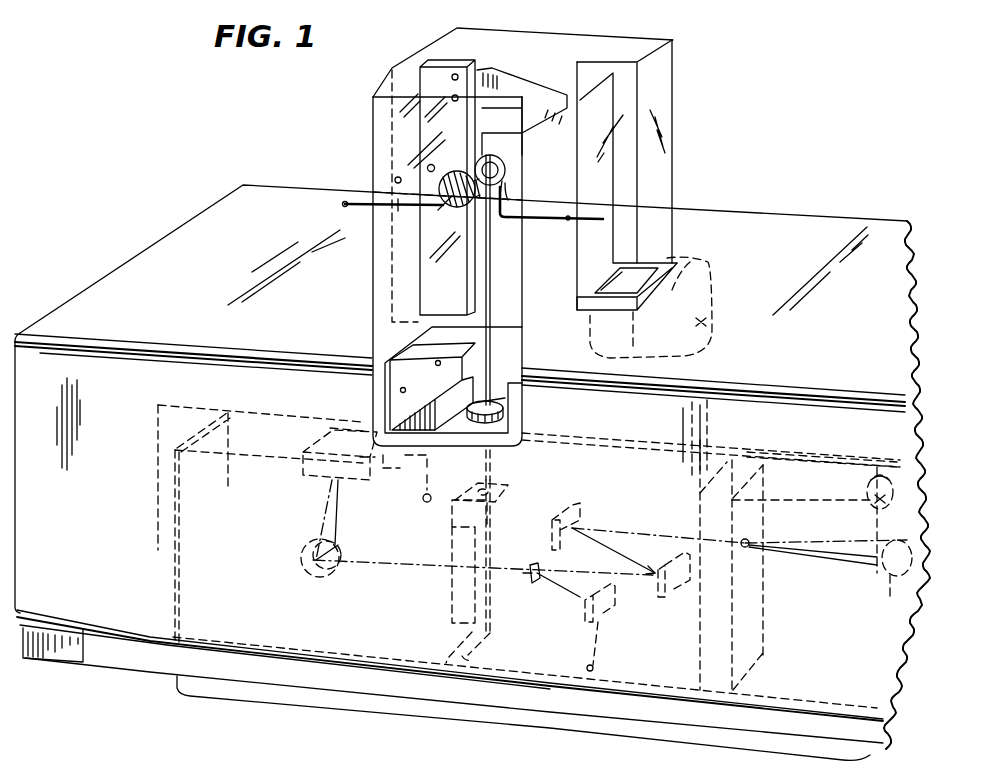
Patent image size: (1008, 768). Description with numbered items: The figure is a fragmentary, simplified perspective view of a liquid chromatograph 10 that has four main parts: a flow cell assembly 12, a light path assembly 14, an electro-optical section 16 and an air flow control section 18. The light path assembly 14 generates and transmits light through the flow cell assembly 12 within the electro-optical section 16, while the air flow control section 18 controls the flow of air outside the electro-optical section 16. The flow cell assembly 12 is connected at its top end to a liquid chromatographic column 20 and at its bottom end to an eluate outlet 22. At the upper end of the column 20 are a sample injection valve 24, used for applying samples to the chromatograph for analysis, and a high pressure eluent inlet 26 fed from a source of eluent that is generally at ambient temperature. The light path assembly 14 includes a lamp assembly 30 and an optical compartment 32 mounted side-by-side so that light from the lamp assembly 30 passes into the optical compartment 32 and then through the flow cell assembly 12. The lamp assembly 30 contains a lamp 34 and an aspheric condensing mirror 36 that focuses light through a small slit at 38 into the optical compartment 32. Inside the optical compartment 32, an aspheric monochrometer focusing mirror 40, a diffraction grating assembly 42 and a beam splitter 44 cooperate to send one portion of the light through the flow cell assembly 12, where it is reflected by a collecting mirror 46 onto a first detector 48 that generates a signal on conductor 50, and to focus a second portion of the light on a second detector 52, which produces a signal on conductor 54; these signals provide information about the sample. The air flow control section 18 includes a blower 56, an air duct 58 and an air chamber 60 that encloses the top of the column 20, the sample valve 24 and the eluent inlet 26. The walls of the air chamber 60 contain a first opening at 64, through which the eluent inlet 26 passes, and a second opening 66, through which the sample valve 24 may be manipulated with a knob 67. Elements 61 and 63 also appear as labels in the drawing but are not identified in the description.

The liquid chromatograph 10 is at (782, 108).
The flow cell assembly 12 is at (447, 604).
The light path assembly 14 is at (440, 719).
The electro-optical section 16 is at (851, 212).
The air flow control section 18 is at (684, 84).
The liquid chromatographic column 20 is at (490, 322).
The eluate outlet 22 is at (470, 648).
The sample injection valve 24 is at (500, 132).
The high pressure eluent inlet 26 is at (517, 192).
The lamp assembly 30 is at (792, 455).
The optical compartment 32 is at (192, 597).
The lamp 34 is at (877, 462).
The aspheric condensing mirror 36 is at (890, 588).
The slit 38 is at (755, 537).
The aspheric monochrometer focusing mirror 40 is at (578, 517).
The diffraction grating assembly 42 is at (673, 600).
The beam splitter 44 is at (528, 564).
The collecting mirror 46 is at (303, 563).
The first detector 48 is at (330, 478).
The conductor 50 is at (403, 480).
The second detector 52 is at (583, 608).
The conductor 54 is at (602, 650).
The blower 56 is at (706, 322).
The air duct 58 is at (655, 192).
The air chamber 60 is at (428, 54).
The rod 61 is at (395, 201).
The rod end 63 is at (344, 203).
The first opening 64 is at (570, 216).
The second opening 66 is at (478, 165).
The knob 67 is at (460, 206).